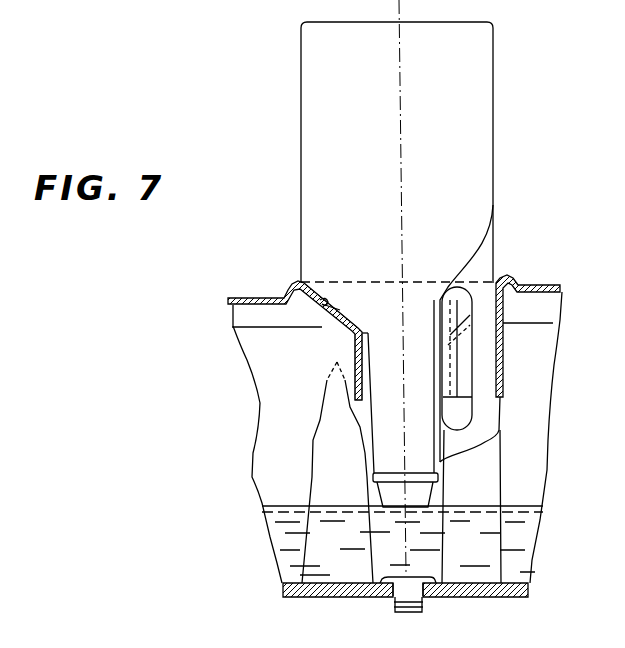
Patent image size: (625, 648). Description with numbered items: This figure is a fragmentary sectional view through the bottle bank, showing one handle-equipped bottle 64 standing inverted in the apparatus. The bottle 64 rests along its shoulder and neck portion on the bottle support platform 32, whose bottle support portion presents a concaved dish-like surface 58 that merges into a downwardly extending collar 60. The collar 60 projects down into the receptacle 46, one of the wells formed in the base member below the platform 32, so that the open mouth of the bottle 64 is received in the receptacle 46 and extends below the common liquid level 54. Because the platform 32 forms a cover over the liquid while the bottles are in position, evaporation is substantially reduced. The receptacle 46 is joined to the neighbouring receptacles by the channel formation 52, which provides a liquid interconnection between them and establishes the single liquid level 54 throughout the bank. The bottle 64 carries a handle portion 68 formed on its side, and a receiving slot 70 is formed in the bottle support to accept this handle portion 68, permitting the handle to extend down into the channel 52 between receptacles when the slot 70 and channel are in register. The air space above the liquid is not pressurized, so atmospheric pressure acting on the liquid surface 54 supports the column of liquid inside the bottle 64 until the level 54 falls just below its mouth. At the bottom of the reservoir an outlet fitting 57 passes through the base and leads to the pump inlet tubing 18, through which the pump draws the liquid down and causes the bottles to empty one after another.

The bottle 64 is at (356, 201).
The bottle support platform 32 is at (255, 297).
The inclined panel portion 58 is at (322, 326).
The collar 60 is at (355, 372).
The receiving slot 70 is at (465, 384).
The handle portion 68 is at (500, 430).
The channel formation 52 is at (480, 478).
The receptacle 46 is at (368, 462).
The liquid level 54 is at (273, 487).
The outlet nipple 57 is at (393, 572).
The pump inlet tubing 18 is at (395, 612).